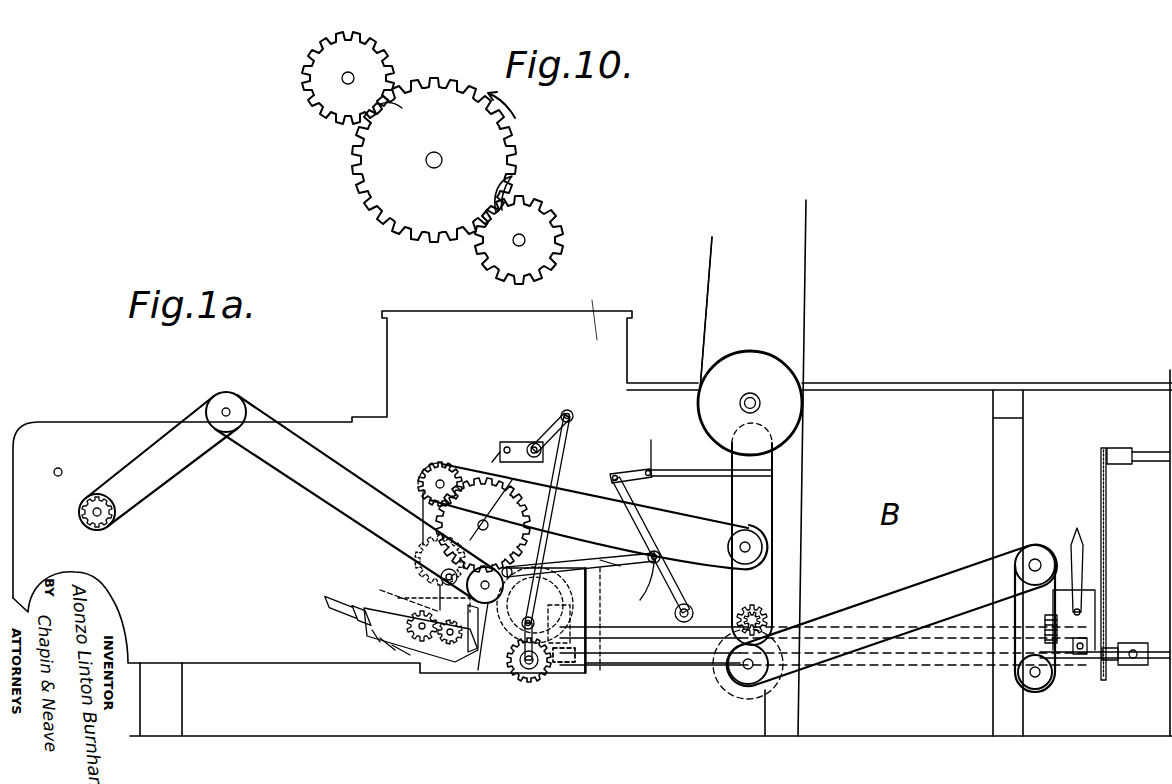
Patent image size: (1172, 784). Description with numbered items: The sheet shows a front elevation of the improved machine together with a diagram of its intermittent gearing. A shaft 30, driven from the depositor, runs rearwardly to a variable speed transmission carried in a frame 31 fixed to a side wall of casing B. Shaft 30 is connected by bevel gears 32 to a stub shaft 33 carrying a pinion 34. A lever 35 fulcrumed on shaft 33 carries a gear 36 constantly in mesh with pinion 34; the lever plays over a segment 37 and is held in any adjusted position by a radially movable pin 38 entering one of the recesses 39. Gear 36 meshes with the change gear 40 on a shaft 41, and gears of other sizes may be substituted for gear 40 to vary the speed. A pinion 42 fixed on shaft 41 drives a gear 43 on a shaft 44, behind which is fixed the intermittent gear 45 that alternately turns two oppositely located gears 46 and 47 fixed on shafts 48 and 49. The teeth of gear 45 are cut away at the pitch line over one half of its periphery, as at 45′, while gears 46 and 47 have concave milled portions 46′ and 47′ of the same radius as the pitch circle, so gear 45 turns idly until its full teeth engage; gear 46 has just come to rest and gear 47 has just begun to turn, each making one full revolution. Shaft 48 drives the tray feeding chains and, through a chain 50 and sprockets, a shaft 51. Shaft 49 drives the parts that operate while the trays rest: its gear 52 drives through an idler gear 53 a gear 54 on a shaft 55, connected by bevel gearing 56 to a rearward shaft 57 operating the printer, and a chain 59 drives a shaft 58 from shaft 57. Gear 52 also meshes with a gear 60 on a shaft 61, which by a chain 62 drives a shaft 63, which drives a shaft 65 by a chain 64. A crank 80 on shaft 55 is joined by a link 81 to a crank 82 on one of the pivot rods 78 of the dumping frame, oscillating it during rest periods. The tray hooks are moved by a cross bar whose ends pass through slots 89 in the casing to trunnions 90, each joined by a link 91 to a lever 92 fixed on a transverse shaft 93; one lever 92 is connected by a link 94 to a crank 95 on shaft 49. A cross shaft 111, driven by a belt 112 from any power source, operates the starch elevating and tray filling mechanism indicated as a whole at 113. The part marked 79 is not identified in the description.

In FIG. 1a, the shaft 30 is at (612, 625).
In FIG. 1a, the frame 31 is at (605, 556).
In FIG. 1a, the bevel gears 32 is at (449, 648).
In FIG. 1a, the stub shaft 33 is at (421, 642).
In FIG. 1a, the pinion 34 is at (398, 660).
In FIG. 1a, the lever 35 is at (370, 636).
In FIG. 1a, the gear 36 is at (384, 642).
In FIG. 1a, the segment 37 is at (400, 578).
In FIG. 1a, the radially movable pin 38 is at (368, 616).
In FIG. 1a, the recesses 39 is at (380, 590).
In FIG. 1a, the change gear 40 is at (430, 556).
In FIG. 1a, the shaft 41 is at (438, 588).
In FIG. 1a, the pinion 42 is at (422, 597).
In FIG. 1a, the gear 43 is at (440, 570).
In FIG. 10, the shaft 44 is at (430, 165).
In FIG. 1a, the shaft 44 is at (480, 524).
In FIG. 10, the intermittent gear 45 is at (434, 160).
In FIG. 1a, the intermittent gear 45 is at (483, 525).
In FIG. 10, the cut away portion 45′ is at (512, 138).
In FIG. 10, the gear 46 is at (365, 72).
In FIG. 1a, the gear 46 is at (425, 494).
In FIG. 10, the concave milled out portion 46′ is at (395, 122).
In FIG. 10, the gear 47 is at (545, 239).
In FIG. 1a, the gear 47 is at (537, 605).
In FIG. 10, the concave milled out portion 47′ is at (508, 182).
In FIG. 10, the shaft 48 is at (345, 80).
In FIG. 1a, the shaft 48 is at (445, 470).
In FIG. 10, the shaft 49 is at (513, 243).
In FIG. 1a, the shaft 49 is at (560, 490).
In FIG. 1a, the chain 50 is at (687, 522).
In FIG. 1a, the shaft 51 is at (762, 548).
In FIG. 1a, the gear 52 is at (530, 562).
In FIG. 1a, the idler gear 53 is at (603, 665).
In FIG. 1a, the gear 54 is at (528, 684).
In FIG. 1a, the shaft 55 is at (538, 684).
In FIG. 1a, the bevel gearing 56 is at (548, 668).
In FIG. 1a, the shaft 57 is at (655, 662).
In FIG. 1a, the shaft 58 is at (1148, 466).
In FIG. 1a, the chain 59 is at (1104, 556).
In FIG. 1a, the gear 60 is at (489, 619).
In FIG. 1a, the shaft 61 is at (490, 672).
In FIG. 1a, the chain 62 is at (308, 488).
In FIG. 1a, the shaft 63 is at (242, 410).
In FIG. 1a, the chain 64 is at (193, 497).
In FIG. 1a, the shaft 65 is at (113, 530).
In FIG. 1a, the pivot rods 78 is at (520, 442).
In FIG. 1a, the pin 79 is at (502, 455).
In FIG. 1a, the crank 80 is at (520, 672).
In FIG. 1a, the link 81 is at (570, 444).
In FIG. 1a, the crank 82 is at (550, 432).
In FIG. 1a, the slots 89 is at (676, 470).
In FIG. 1a, the trunnions 90 is at (653, 444).
In FIG. 1a, the link 91 is at (625, 474).
In FIG. 1a, the lever 92 is at (648, 535).
In FIG. 1a, the transverse shaft 93 is at (690, 604).
In FIG. 1a, the link 94 is at (641, 589).
In FIG. 1a, the crank 95 is at (605, 563).
In FIG. 1a, the shaft 111 is at (756, 400).
In FIG. 1a, the belt 112 is at (892, 295).
In FIG. 1a, the starch elevating and tray filling mechanism 113 is at (768, 620).